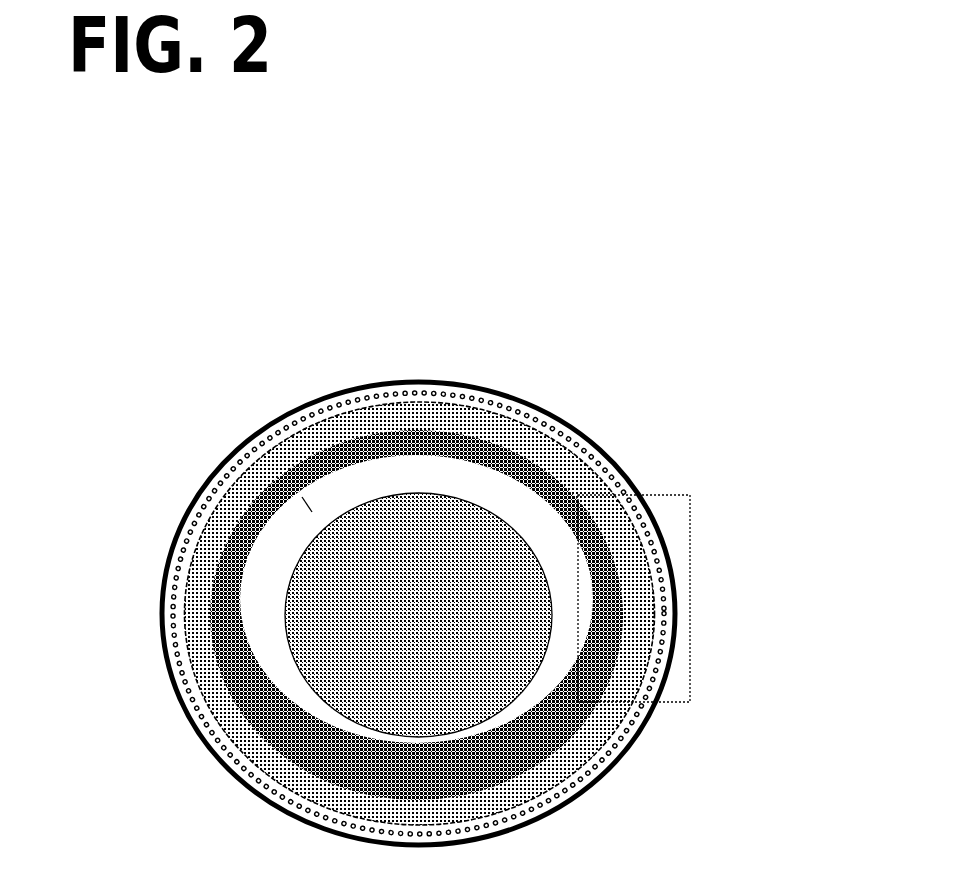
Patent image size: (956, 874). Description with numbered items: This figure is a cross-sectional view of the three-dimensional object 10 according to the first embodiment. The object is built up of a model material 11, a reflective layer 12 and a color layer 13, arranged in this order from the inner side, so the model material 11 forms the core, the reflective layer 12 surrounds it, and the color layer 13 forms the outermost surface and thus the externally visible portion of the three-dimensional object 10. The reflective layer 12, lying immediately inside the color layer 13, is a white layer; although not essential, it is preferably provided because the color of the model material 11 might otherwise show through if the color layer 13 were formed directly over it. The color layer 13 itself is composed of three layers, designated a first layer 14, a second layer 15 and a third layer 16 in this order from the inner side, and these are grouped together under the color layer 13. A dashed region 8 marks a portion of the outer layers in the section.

The enlarged region 8 is at (665, 494).
The three-dimensional object 10 is at (757, 352).
The model material 11 is at (520, 527).
The reflective layer 12 is at (249, 449).
The color layer 13 is at (407, 295).
The first layer 14 is at (410, 380).
The second layer 15 is at (458, 388).
The third layer 16 is at (491, 392).